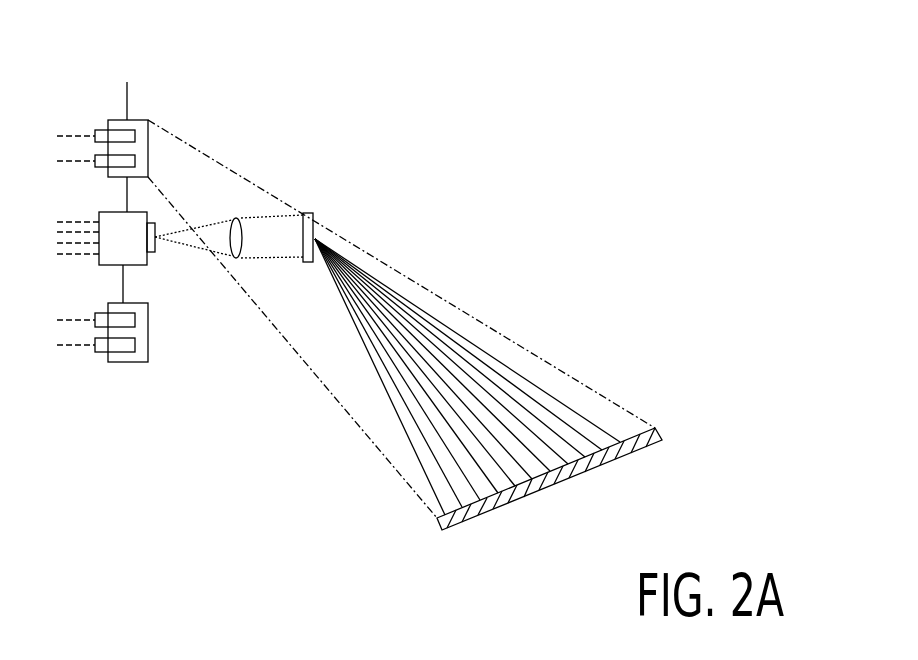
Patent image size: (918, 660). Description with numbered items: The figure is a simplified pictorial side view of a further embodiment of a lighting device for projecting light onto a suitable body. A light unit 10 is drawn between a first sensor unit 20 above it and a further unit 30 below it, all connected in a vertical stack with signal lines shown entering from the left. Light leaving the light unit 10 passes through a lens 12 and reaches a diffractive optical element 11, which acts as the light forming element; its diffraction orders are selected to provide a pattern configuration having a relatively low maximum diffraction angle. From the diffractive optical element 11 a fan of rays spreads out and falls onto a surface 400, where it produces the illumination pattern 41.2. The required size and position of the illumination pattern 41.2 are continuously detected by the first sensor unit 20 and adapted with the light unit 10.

The first sensor unit 20 is at (117, 118).
The light unit 10 is at (101, 263).
The light source module 30 is at (113, 363).
The lens 12 is at (247, 228).
The diffractive optical element 11 is at (308, 216).
The projection surface 400 is at (550, 489).
The illumination pattern 41.2 is at (600, 440).